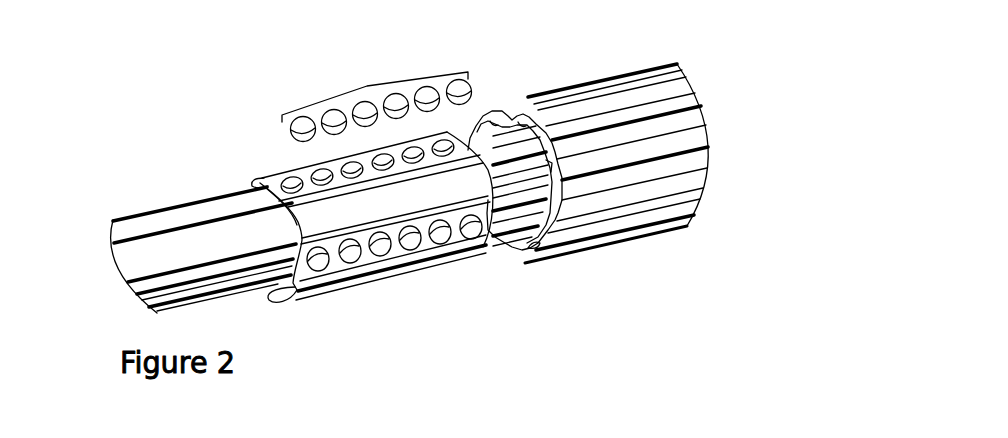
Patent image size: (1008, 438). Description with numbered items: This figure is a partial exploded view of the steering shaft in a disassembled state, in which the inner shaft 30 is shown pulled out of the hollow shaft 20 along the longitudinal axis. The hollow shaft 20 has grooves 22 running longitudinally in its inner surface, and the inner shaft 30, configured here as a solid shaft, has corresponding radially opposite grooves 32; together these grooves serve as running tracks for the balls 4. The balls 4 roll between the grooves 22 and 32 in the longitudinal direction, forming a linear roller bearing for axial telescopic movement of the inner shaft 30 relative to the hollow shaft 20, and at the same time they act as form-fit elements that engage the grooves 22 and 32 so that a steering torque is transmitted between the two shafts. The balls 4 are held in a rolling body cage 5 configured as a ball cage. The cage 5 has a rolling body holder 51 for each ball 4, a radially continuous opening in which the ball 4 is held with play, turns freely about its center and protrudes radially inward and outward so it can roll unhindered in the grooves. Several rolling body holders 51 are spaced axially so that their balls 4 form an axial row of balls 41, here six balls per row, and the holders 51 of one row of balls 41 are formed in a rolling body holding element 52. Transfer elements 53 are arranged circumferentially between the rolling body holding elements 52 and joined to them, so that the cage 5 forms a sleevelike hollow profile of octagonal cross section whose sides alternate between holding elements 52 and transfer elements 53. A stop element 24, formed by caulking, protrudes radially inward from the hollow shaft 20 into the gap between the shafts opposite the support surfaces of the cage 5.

The hollow shaft 20 is at (658, 95).
The grooves 22 is at (487, 151).
The stop element 24 is at (527, 250).
The inner shaft 30 is at (135, 260).
The grooves 32 is at (145, 225).
The balls 4 is at (356, 104).
The row of balls 41 is at (367, 92).
The rolling body cage 5 is at (256, 142).
The rolling body holder 51 is at (346, 169).
The rolling body holding element 52 is at (336, 258).
The transfer element 53 is at (333, 218).